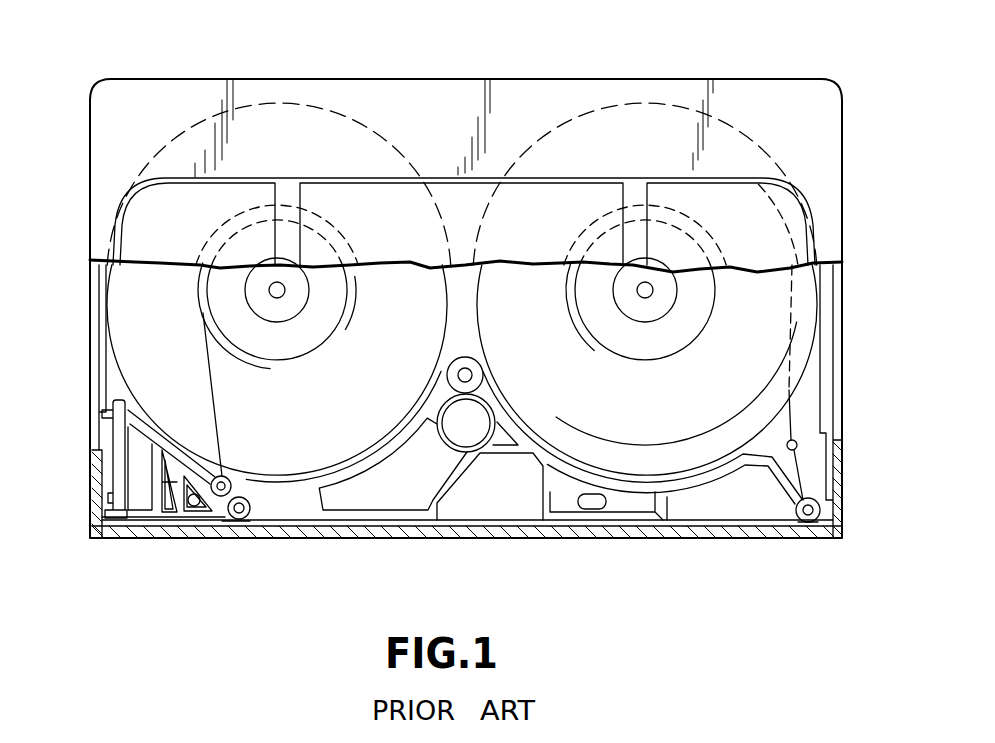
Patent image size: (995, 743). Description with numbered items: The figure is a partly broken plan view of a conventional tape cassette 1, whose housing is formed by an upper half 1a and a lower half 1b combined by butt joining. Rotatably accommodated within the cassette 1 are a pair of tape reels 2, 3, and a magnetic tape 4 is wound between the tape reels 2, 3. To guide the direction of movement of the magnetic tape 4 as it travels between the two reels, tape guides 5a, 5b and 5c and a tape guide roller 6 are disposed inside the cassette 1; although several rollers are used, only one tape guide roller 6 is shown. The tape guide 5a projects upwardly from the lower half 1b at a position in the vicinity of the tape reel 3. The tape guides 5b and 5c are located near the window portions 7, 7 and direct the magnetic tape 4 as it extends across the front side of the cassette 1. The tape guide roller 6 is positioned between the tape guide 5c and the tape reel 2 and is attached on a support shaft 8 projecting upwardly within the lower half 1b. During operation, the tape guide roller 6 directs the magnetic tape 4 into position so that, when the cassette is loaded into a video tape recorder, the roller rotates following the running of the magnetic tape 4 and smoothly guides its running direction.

The cassette 1 is at (806, 87).
The upper half 1a is at (103, 190).
The lower half 1b is at (101, 388).
The tape reel 2 is at (112, 300).
The tape reel 3 is at (812, 314).
The magnetic tape 4 is at (218, 394).
The tape guide 5a is at (798, 442).
The tape guide 5b is at (807, 521).
The tape guide 5c is at (228, 522).
The tape guide roller 6 is at (216, 475).
The window portion 7 is at (210, 537).
The support shaft 8 is at (226, 478).